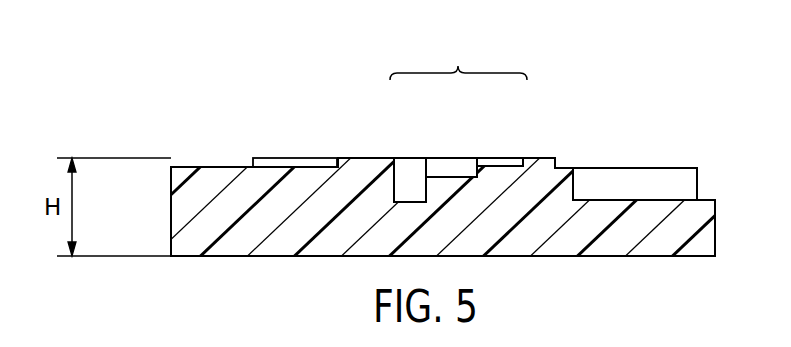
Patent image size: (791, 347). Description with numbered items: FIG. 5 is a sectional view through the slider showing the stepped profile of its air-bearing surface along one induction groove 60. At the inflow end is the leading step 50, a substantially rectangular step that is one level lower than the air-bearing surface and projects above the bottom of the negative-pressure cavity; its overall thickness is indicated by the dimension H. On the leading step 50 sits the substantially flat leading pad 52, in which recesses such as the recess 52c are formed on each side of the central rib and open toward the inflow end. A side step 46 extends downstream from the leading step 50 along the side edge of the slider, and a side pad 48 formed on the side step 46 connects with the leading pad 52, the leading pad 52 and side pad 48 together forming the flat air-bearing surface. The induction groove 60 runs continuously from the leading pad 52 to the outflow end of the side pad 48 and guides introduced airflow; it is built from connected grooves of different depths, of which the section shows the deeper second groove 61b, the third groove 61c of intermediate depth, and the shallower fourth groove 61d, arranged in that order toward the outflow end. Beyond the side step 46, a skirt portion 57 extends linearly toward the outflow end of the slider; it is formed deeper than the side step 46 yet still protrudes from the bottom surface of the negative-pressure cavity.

The leading step 50 is at (171, 207).
The leading pad 52 is at (359, 158).
The recess 52c is at (270, 158).
The induction groove 60 is at (458, 66).
The second groove 61b is at (408, 164).
The third groove 61c is at (458, 164).
The fourth groove 61d is at (500, 164).
The side step 46 is at (532, 178).
The side pad 48 is at (553, 158).
The skirt portion 57 is at (650, 175).